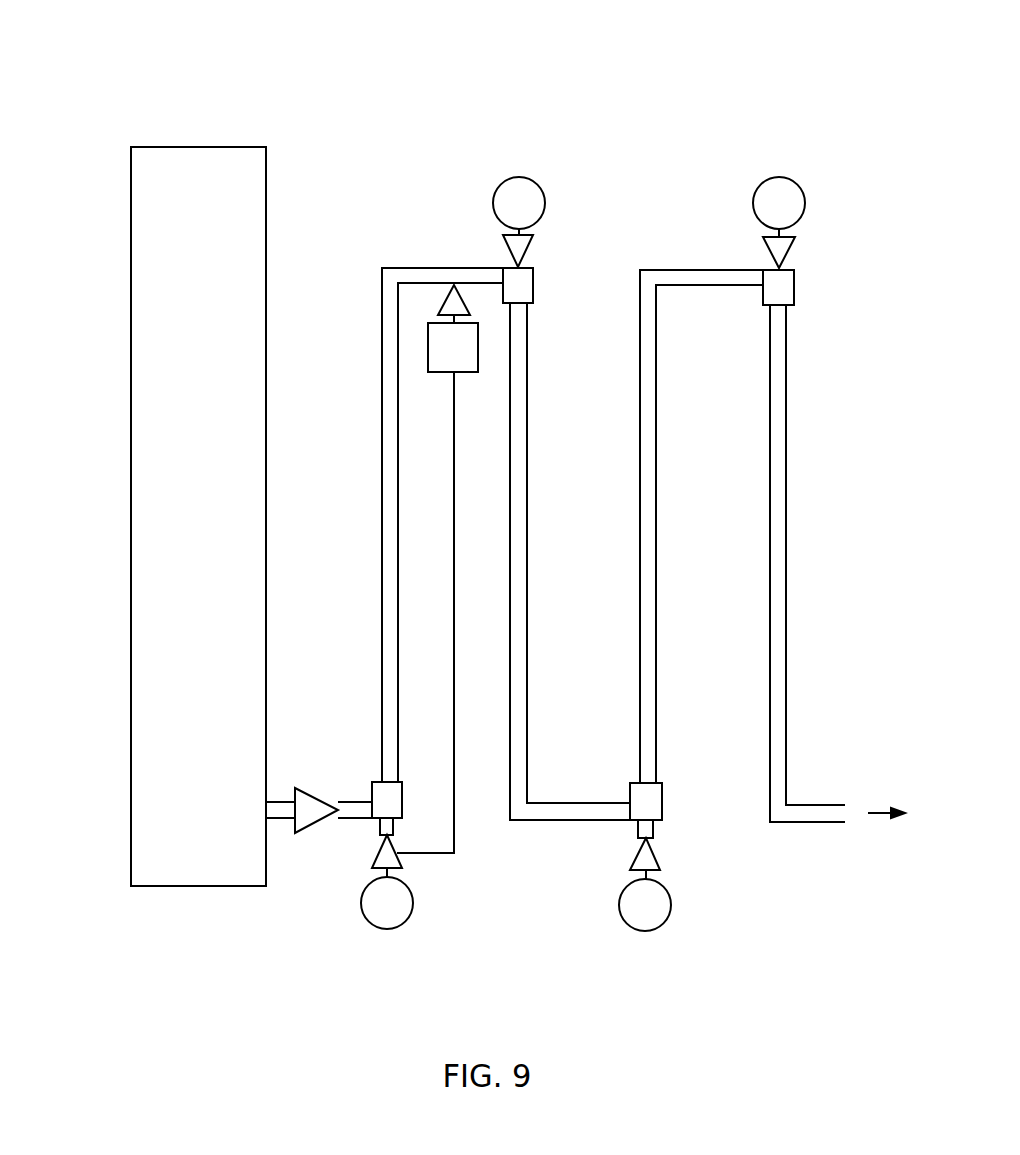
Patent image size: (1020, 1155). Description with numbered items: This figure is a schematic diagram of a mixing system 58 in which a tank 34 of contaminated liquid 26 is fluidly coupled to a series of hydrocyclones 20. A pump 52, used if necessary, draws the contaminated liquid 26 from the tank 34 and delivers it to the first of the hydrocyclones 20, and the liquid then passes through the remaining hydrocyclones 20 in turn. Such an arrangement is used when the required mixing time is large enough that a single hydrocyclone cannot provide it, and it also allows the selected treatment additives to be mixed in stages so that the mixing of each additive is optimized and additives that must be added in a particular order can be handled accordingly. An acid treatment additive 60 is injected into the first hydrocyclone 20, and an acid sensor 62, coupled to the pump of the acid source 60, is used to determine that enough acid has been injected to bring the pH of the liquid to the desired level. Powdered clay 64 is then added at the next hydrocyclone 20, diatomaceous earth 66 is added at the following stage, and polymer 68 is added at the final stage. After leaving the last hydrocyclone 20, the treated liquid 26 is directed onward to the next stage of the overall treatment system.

The system 58 is at (250, 90).
The contaminated liquid 26 is at (158, 555).
The tank 34 is at (158, 555).
The pump 52 is at (284, 894).
The hydrocyclone 20 is at (355, 545).
The acid treatment additive 60 is at (426, 883).
The acid sensor 62 is at (404, 532).
The powdered clay 64 is at (561, 211).
The diatomaceous earth 66 is at (691, 887).
The polymer 68 is at (816, 209).